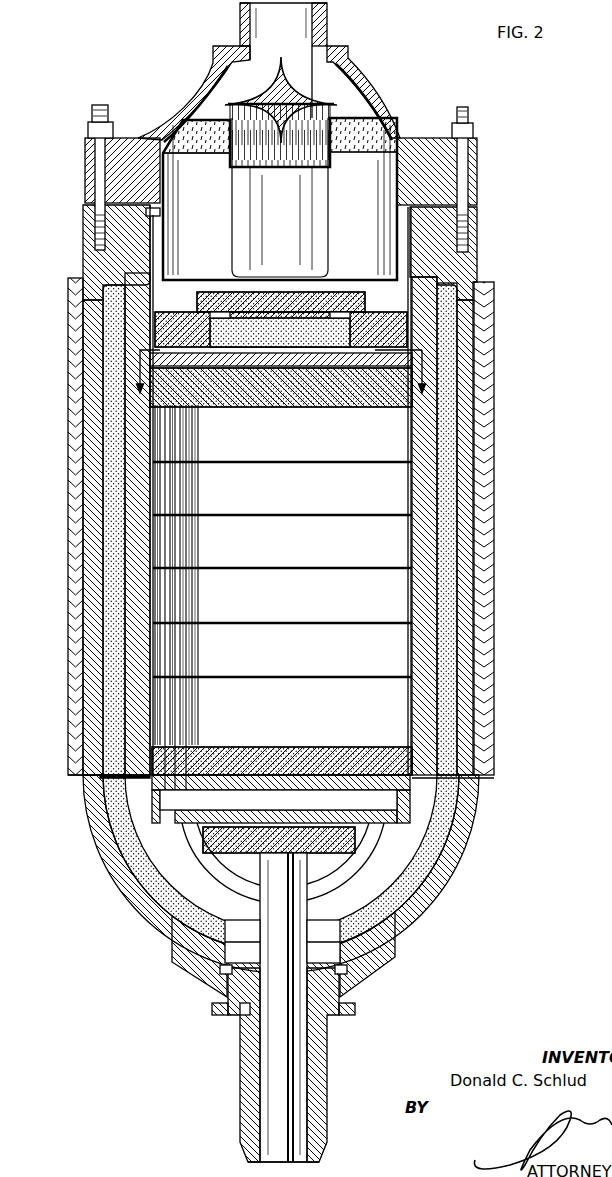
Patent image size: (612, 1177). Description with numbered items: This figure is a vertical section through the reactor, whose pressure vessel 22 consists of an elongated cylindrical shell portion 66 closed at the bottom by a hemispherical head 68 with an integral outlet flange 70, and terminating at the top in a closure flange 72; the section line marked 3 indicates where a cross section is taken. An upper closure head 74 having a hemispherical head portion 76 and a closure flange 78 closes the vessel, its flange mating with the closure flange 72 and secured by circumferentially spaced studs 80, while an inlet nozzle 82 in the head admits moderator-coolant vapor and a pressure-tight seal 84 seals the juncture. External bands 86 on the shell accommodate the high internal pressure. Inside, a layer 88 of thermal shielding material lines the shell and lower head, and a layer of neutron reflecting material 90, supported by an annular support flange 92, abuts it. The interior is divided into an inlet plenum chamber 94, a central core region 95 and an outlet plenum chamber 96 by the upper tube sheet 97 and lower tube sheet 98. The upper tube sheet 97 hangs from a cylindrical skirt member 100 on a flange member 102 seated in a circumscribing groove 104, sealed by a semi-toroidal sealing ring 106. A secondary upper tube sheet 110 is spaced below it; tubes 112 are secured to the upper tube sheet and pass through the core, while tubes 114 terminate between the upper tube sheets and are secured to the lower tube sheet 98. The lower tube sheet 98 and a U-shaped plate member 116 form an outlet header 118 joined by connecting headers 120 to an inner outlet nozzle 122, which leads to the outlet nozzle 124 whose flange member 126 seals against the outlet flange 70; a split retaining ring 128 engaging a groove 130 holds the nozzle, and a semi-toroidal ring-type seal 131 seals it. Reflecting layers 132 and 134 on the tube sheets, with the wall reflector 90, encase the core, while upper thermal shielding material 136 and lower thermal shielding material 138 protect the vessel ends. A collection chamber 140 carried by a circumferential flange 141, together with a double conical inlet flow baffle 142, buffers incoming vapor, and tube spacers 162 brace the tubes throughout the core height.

The pressure vessel 22 is at (492, 266).
The cylindrical shell portion 66 is at (467, 442).
The hemispherical head 68 is at (465, 818).
The outlet flange 70 is at (375, 958).
The closure flange 72 is at (477, 222).
The upper closure head 74 is at (372, 72).
The hemispherical head portion 76 is at (367, 108).
The closure flange 78 is at (477, 157).
The studs 80 is at (464, 107).
The inlet nozzle 82 is at (313, 35).
The pressure-tight seal 84 is at (150, 205).
The external bands 86 is at (494, 330).
The thermal shielding material layer 88 is at (103, 537).
The neutron reflecting material layer 90 is at (125, 637).
The annular support flange 92 is at (103, 778).
The inlet plenum chamber 94 is at (280, 191).
The central core region 95 is at (292, 536).
The outlet plenum chamber 96 is at (400, 851).
The upper tube sheet 97 is at (250, 343).
The lower tube sheet 98 is at (268, 780).
The cylindrical skirt member 100 is at (366, 308).
The flange member 102 is at (152, 213).
The circumscribing groove 104 is at (150, 214).
The semi-toroidal sealing ring 106 is at (148, 200).
The secondary upper tube sheet 110 is at (290, 373).
The tubes 112 is at (195, 438).
The tubes 114 is at (192, 503).
The U-shaped plate member 116 is at (300, 814).
The outlet header 118 is at (278, 800).
The connecting headers 120 is at (190, 860).
The inner outlet nozzle 122 is at (272, 952).
The outlet nozzle 124 is at (320, 1056).
The flange member 126 is at (345, 972).
The split retaining ring 128 is at (212, 1006).
The groove 130 is at (243, 1017).
The semi-toroidal ring-type seal 131 is at (222, 972).
The neutron reflecting material layer 132 is at (348, 388).
The neutron reflecting material layer 134 is at (338, 763).
The upper thermal shielding material 136 is at (196, 308).
The lower thermal shielding material 138 is at (220, 848).
The collection chamber 140 is at (173, 137).
The circumferential flange 141 is at (170, 190).
The inlet flow baffle 142 is at (260, 93).
The tube spacers 162 is at (350, 622).
The section line 3- 3 is at (281, 384).